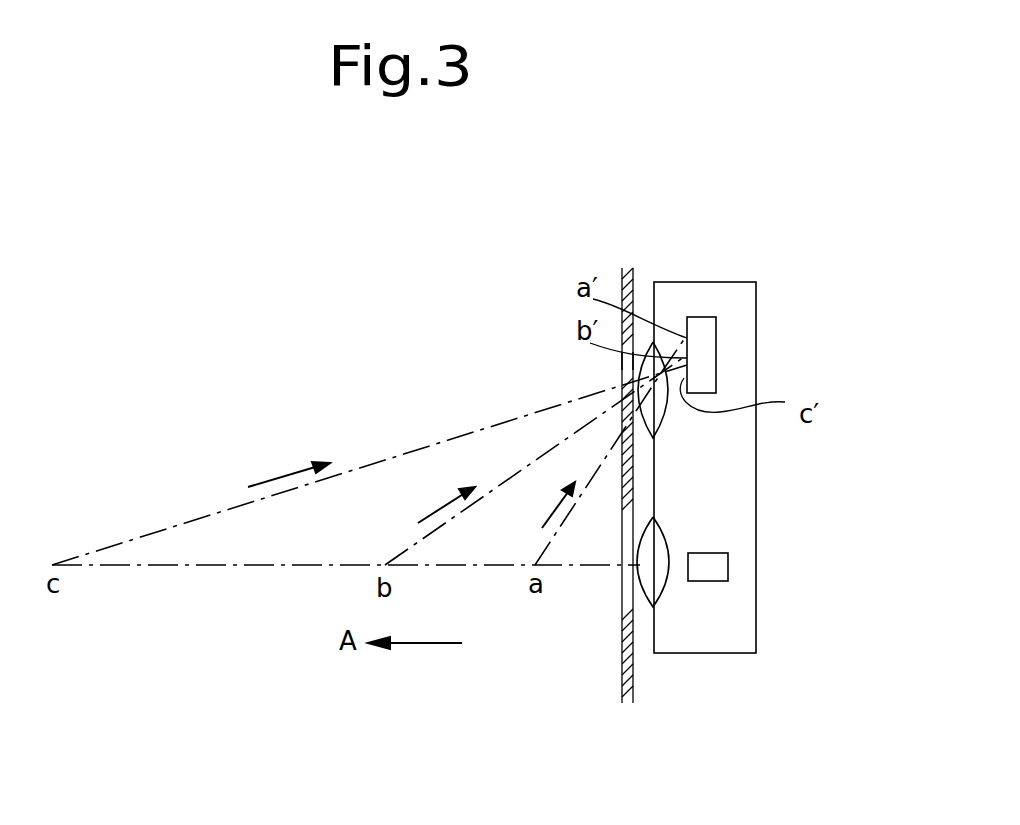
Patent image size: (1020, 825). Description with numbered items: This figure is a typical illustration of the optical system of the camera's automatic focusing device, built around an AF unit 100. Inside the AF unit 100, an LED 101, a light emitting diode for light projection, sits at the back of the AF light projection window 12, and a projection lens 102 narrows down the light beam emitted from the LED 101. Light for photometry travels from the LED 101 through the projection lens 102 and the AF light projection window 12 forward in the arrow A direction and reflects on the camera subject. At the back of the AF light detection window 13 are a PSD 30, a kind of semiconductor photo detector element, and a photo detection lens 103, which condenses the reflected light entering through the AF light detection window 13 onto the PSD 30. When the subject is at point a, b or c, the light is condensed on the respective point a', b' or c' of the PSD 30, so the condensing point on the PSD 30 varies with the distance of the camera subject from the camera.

The AF light projection window 12 is at (622, 591).
The AF light detection window 13 is at (622, 377).
The PSD 30 is at (708, 317).
The AF unit 100 is at (757, 322).
The LED 101 is at (728, 567).
The projection lens 102 is at (669, 537).
The photo detection lens 103 is at (666, 418).